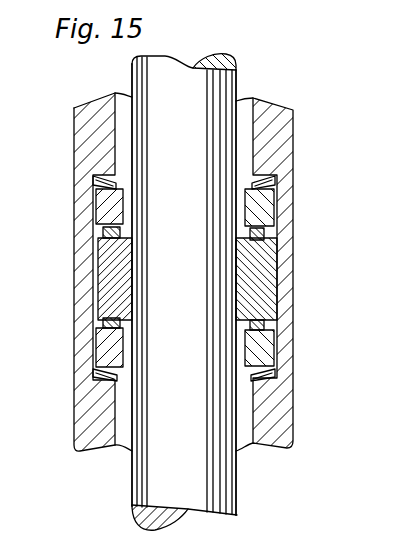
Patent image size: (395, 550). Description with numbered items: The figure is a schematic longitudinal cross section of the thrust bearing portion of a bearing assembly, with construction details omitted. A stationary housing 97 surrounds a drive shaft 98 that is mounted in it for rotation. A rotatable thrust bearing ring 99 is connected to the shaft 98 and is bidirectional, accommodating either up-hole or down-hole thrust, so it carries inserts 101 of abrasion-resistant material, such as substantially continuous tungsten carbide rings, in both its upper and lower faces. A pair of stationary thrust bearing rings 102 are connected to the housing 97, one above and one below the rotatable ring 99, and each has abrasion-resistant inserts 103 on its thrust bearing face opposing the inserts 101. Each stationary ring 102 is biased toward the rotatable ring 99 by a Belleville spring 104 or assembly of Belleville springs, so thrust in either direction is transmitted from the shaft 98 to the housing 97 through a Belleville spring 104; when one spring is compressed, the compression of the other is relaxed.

The stationary housing 97 is at (73, 438).
The drive shaft 98 is at (223, 475).
The rotatable thrust bearing ring 99 is at (268, 293).
The inserts 101 is at (133, 290).
The stationary thrust bearing rings 102 is at (93, 205).
The abrasion-resistant inserts 103 is at (100, 225).
The Belleville spring 104 is at (95, 178).